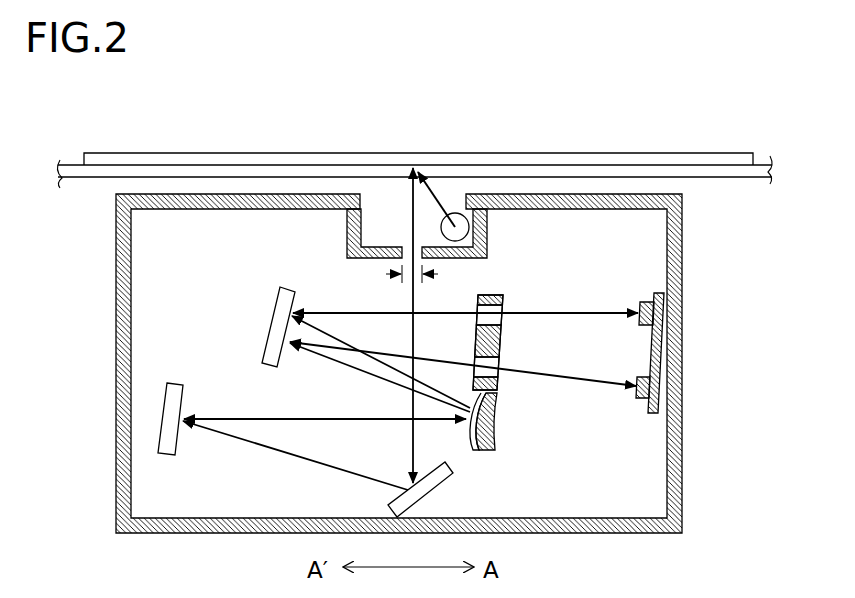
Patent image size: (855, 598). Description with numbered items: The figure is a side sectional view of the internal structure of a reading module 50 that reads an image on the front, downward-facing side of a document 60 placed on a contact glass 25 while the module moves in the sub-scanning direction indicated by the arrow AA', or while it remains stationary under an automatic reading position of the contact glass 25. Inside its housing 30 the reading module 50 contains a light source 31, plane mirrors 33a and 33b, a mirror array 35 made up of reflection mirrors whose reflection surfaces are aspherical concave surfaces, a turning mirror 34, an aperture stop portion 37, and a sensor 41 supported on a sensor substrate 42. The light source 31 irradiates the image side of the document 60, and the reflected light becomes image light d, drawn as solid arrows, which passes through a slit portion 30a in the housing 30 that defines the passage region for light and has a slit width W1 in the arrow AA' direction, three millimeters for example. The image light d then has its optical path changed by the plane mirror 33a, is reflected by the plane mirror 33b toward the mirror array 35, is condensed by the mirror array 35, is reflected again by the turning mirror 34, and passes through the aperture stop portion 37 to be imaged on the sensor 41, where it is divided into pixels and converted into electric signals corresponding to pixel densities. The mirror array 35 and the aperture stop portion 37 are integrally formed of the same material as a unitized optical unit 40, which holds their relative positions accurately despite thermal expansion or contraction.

The contact glass 25 is at (73, 172).
The document 60 is at (682, 159).
The housing 30 is at (683, 432).
The slit portion 30a is at (407, 247).
The light source 31 is at (470, 227).
The reading module 50 is at (701, 258).
The slit width W1 is at (433, 275).
The image light d is at (410, 289).
The turning mirror 34 is at (280, 332).
The plane mirror 33a is at (430, 484).
The plane mirror 33b is at (168, 413).
The optical unit 40 is at (503, 297).
The aperture stop portion 37 is at (497, 320).
The mirror array 35 is at (493, 423).
The sensor substrate 42 is at (661, 340).
The sensor 41 is at (641, 399).